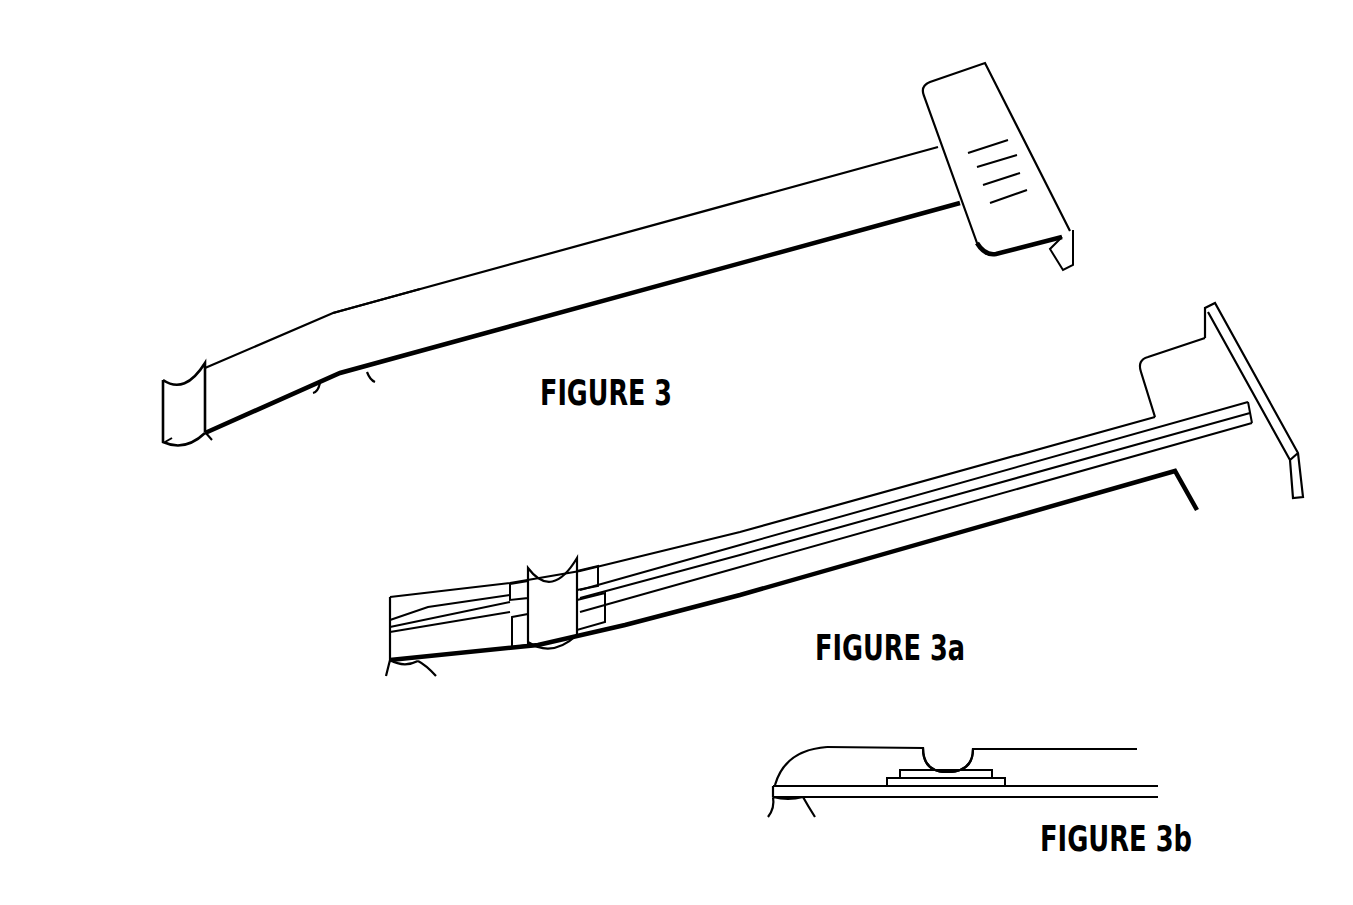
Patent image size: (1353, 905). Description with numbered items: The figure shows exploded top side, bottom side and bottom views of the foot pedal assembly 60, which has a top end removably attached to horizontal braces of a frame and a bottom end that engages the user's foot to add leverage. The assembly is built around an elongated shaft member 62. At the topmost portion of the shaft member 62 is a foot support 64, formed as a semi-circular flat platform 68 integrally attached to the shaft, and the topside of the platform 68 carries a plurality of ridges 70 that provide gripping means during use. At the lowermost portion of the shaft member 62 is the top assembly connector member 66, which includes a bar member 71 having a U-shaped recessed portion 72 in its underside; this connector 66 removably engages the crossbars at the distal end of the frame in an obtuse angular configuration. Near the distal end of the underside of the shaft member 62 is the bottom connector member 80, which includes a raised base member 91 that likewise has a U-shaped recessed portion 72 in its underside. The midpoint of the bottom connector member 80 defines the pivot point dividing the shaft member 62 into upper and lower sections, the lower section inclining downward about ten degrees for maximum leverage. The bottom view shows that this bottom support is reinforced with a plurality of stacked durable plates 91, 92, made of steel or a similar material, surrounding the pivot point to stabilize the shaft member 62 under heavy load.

In FIG. 3, the foot pedal assembly 60 is at (347, 310).
In FIG. 3A, the foot pedal assembly 60 is at (705, 542).
In FIG. 3, the shaft member 62 is at (803, 203).
In FIG. 3A, the shaft member 62 is at (1003, 505).
In FIG. 3B, the shaft member 62 is at (965, 772).
In FIG. 3, the foot support 64 is at (1038, 162).
In FIG. 3A, the foot support 64 is at (1227, 358).
In FIG. 3, the assembly connector member 66 is at (183, 388).
In FIG. 3B, the assembly connector member 66 is at (792, 800).
In FIG. 3, the semi-circular flat platform 68 is at (968, 92).
In FIG. 3A, the semi-circular flat platform 68 is at (1247, 497).
In FIG. 3, the ridges 70 is at (1007, 132).
In FIG. 3, the bar member 71 is at (217, 431).
In FIG. 3, the U-shaped recessed portion 72 is at (173, 440).
In FIG. 3A, the U-shaped recessed portion 72 is at (412, 668).
In FIG. 3, the bottom connector member 80 is at (342, 378).
In FIG. 3A, the bottom connector member 80 is at (553, 597).
In FIG. 3B, the bottom connector member 80 is at (947, 757).
In FIG. 3A, the raised base member 91 is at (582, 577).
In FIG. 3B, the raised base member 91 is at (977, 787).
In FIG. 3A, the durable plate 92 is at (520, 583).